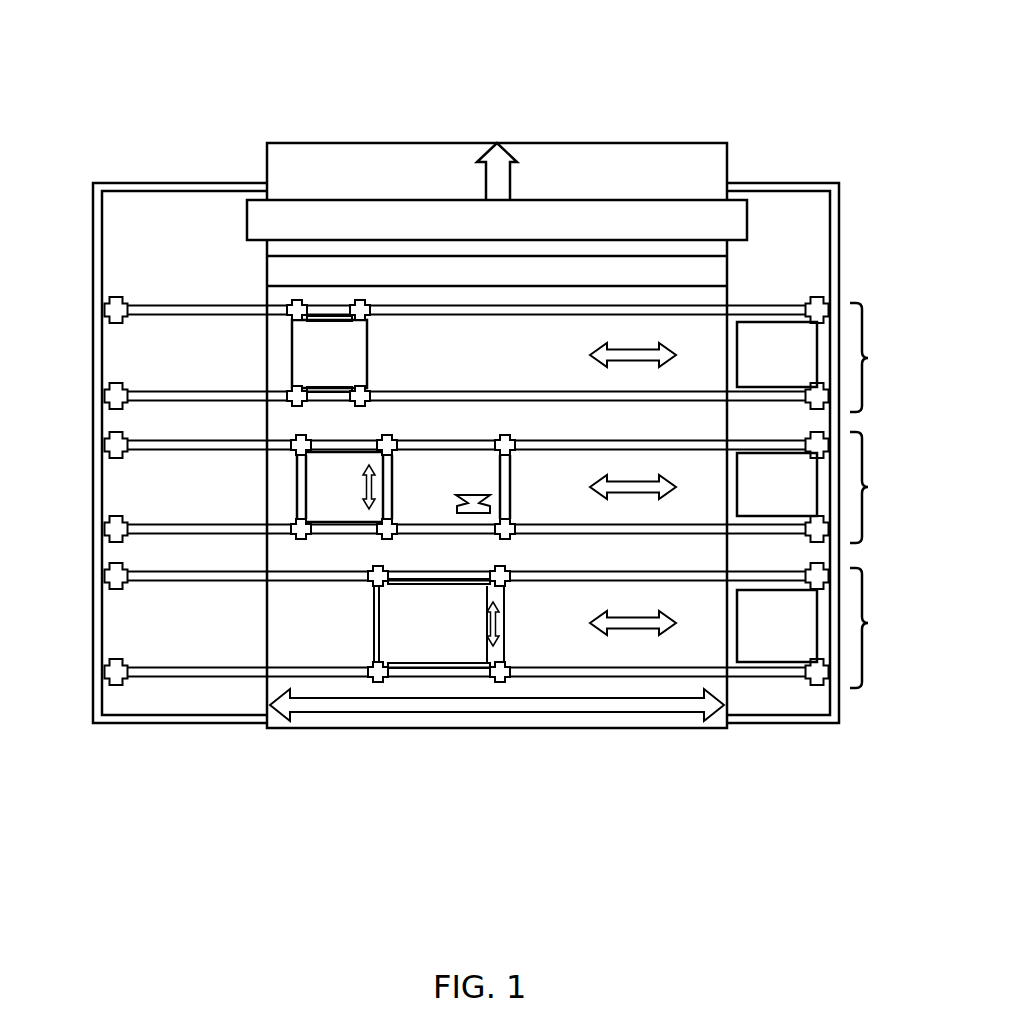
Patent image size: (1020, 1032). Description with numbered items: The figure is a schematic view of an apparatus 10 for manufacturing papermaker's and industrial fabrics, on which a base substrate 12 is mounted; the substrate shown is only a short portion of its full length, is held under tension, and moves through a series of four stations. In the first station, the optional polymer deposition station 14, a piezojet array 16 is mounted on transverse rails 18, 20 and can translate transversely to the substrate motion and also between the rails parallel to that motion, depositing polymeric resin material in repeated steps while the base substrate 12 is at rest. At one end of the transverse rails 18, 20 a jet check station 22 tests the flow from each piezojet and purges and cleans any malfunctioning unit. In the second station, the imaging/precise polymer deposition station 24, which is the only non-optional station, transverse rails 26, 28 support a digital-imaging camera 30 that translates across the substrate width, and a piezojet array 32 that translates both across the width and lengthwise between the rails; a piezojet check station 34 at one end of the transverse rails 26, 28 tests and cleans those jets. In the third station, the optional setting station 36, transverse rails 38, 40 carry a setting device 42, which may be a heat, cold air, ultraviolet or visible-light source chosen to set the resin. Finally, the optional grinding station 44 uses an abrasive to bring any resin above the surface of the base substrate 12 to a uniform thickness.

The apparatus 10 is at (753, 92).
The base substrate 12 is at (337, 722).
The polymer deposition station 14 is at (877, 628).
The piezojet array 16 is at (440, 628).
The transverse rail 18 is at (178, 673).
The transverse rail 20 is at (185, 577).
The jet check station 22 is at (783, 632).
The imaging/precise polymer deposition station 24 is at (877, 487).
The transverse rail 26 is at (165, 530).
The transverse rail 28 is at (162, 443).
The digital-imaging camera 30 is at (478, 503).
The piezojet array 32 is at (325, 501).
The piezojet check station 34 is at (783, 467).
The setting station 36 is at (877, 357).
The transverse rail 38 is at (165, 395).
The transverse rail 40 is at (207, 307).
The setting device 42 is at (307, 352).
The grinding station 44 is at (710, 224).